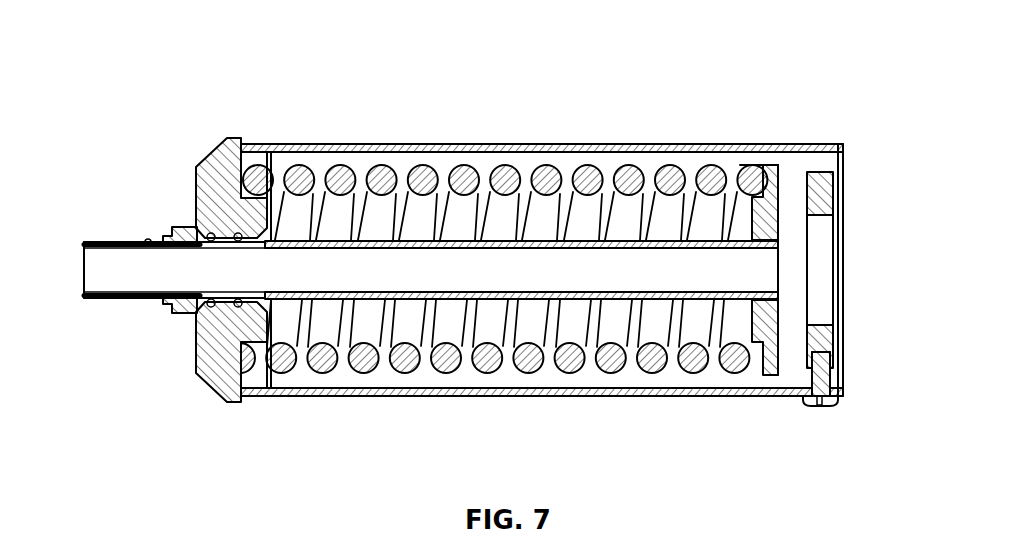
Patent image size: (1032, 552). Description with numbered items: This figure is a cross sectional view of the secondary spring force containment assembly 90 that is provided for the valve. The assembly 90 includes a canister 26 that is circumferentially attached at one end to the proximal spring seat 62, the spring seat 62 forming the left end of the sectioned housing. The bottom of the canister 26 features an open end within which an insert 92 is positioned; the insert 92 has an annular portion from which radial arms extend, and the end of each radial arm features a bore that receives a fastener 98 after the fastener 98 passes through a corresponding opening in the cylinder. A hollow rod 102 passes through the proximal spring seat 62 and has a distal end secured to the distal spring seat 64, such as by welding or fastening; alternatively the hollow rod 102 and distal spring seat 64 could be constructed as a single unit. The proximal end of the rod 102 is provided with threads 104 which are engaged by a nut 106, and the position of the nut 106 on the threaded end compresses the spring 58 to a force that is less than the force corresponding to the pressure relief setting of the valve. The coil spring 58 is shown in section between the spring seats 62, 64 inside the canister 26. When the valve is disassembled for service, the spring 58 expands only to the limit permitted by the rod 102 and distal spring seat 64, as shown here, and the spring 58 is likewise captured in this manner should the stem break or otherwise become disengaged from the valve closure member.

The secondary spring force containment assembly 90 is at (240, 60).
The canister 26 is at (584, 144).
The spring 58 is at (425, 170).
The proximal spring seat 62 is at (211, 391).
The distal spring seat 64 is at (773, 377).
The insert 92 is at (826, 193).
The fastener 98 is at (825, 407).
The hollow rod 102 is at (527, 300).
The threads 104 is at (113, 242).
The nut 106 is at (180, 227).